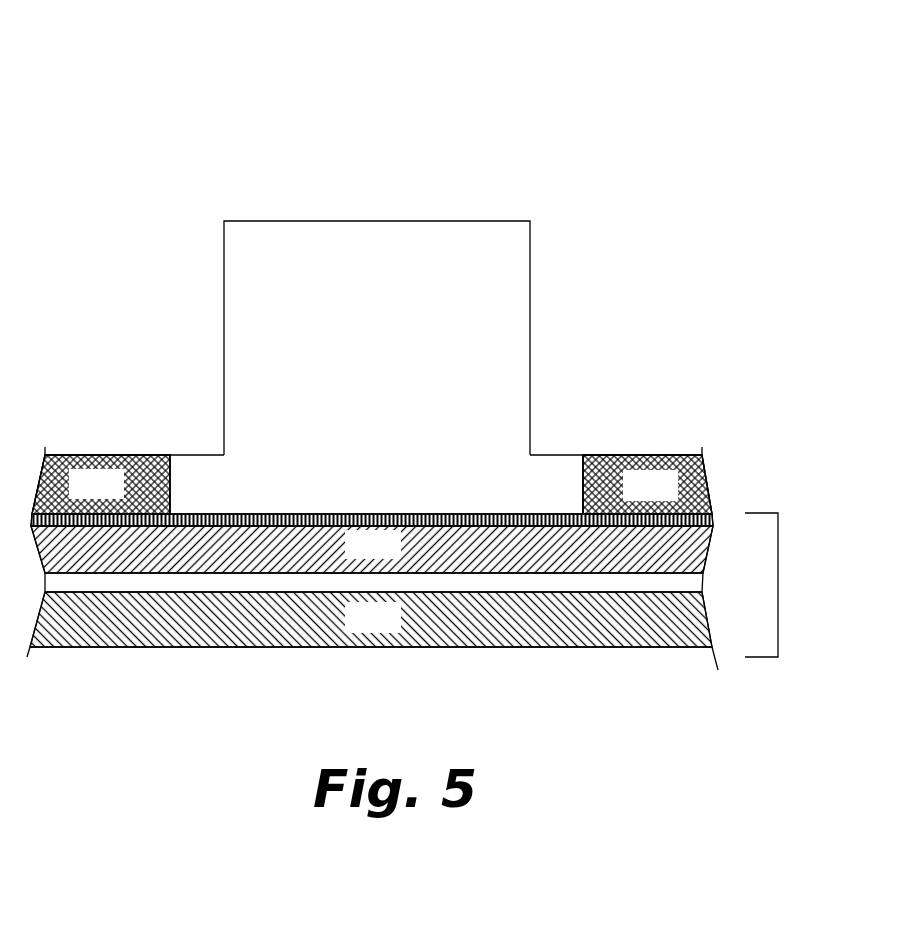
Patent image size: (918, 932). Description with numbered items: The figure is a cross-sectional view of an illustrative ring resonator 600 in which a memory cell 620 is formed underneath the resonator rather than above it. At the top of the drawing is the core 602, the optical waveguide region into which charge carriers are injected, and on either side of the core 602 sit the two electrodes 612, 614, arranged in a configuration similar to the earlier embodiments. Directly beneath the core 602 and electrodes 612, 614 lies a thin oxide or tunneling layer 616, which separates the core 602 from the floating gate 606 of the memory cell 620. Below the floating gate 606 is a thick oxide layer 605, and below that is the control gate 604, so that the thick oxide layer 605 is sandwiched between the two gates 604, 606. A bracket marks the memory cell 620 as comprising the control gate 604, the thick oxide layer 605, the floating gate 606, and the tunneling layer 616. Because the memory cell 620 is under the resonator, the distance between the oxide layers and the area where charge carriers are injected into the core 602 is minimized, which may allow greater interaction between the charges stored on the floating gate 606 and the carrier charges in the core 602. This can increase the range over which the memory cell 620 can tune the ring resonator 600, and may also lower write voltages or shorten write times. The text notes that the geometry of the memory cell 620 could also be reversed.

The ring resonator 600 is at (225, 100).
The core 602 is at (398, 367).
The control gate 604 is at (392, 631).
The thick oxide layer 605 is at (692, 583).
The floating gate 606 is at (392, 557).
The electrode 612 is at (117, 498).
The electrode 614 is at (670, 499).
The thin oxide or tunneling layer 616 is at (715, 523).
The memory cell 620 is at (778, 580).